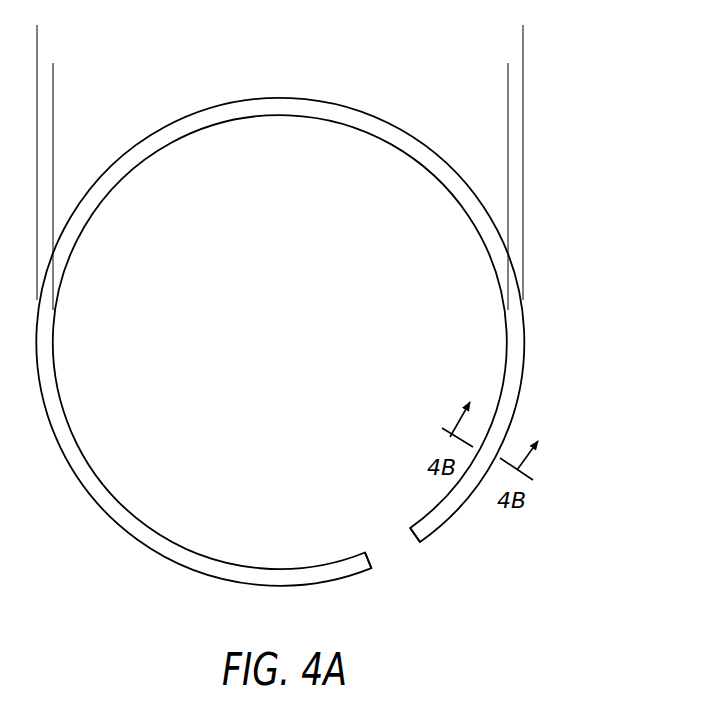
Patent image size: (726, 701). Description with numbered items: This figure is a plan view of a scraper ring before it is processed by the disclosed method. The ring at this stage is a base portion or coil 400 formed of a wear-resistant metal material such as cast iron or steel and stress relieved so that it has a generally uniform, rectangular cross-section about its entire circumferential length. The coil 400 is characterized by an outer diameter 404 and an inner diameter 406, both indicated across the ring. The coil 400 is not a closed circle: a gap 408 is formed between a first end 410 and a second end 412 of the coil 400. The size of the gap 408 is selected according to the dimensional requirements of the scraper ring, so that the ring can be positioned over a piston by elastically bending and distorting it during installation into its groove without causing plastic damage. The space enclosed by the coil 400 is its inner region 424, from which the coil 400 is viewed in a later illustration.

The coil 400 is at (523, 313).
The outer diameter 404 is at (522, 36).
The inner diameter 406 is at (507, 74).
The gap 408 is at (378, 530).
The first end 410 is at (375, 558).
The second end 412 is at (411, 538).
The inner region 424 is at (308, 352).